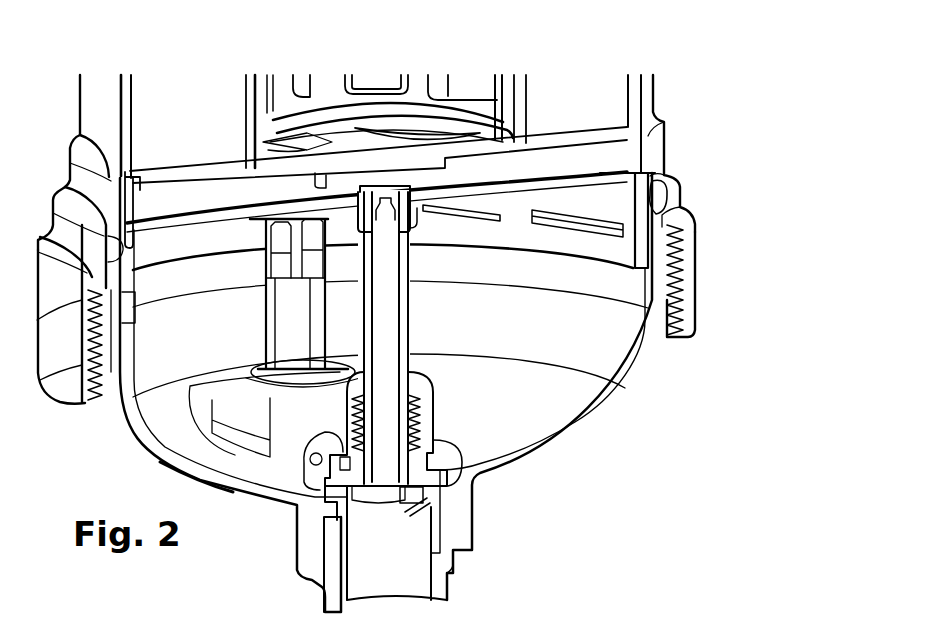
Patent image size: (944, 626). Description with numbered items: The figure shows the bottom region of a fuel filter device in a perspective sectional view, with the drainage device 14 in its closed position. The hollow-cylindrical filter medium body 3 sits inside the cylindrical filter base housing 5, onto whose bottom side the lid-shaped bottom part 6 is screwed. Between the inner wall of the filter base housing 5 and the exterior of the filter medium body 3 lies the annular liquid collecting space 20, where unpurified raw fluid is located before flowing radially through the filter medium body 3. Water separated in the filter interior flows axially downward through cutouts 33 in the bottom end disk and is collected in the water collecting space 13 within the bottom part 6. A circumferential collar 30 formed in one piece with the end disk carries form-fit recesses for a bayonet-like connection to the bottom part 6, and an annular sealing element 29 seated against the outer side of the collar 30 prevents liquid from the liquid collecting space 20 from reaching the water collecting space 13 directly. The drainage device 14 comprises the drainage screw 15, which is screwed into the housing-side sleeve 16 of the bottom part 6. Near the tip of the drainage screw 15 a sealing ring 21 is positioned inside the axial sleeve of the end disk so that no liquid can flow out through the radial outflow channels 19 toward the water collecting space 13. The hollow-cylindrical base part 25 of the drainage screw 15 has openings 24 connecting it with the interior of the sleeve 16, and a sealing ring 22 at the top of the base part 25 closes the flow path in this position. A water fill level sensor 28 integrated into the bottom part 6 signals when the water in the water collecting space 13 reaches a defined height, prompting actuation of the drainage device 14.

The filter medium body 3 is at (612, 99).
The filter base housing 5 is at (687, 221).
The bottom part 6 is at (587, 410).
The water collecting space 13 is at (556, 411).
The drainage device 14 is at (456, 573).
The drainage screw 15 is at (410, 346).
The sleeve 16 is at (463, 520).
The outflow channel 19 is at (193, 195).
The liquid collecting space 20 is at (635, 108).
The sealing ring 21 is at (420, 213).
The sealing ring 22 is at (440, 462).
The opening 24 is at (420, 495).
The base part 25 is at (327, 588).
The water fill level sensor 28 is at (268, 322).
The annular sealing element 29 is at (656, 193).
The collar 30 is at (620, 250).
The cutout 33 is at (423, 137).